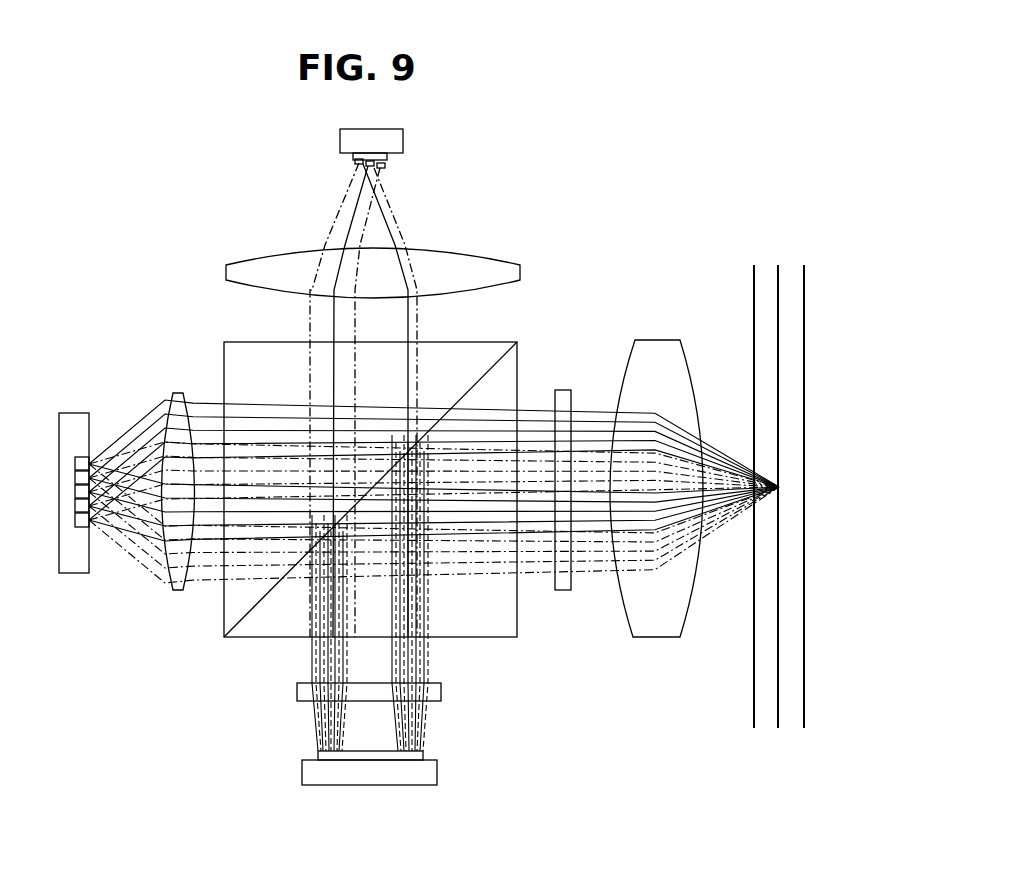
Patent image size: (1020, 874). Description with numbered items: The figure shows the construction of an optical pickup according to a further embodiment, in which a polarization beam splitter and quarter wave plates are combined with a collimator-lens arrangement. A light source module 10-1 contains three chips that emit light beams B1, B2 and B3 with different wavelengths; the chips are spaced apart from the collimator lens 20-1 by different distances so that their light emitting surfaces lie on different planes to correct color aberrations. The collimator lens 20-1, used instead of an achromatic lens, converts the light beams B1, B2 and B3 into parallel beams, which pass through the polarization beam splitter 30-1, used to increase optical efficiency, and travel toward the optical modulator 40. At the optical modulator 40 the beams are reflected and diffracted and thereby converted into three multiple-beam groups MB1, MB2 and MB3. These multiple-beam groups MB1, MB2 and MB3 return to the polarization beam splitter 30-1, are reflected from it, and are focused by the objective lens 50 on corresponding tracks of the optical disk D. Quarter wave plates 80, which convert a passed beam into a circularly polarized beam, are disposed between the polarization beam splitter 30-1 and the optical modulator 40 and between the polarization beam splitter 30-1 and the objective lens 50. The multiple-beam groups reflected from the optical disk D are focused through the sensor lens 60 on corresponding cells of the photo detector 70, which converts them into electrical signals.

The light source module 10-1 is at (395, 142).
The collimator lens 20-1 is at (472, 270).
The polarization beam splitter 30-1 is at (505, 390).
The optical modulator 40 is at (317, 773).
The objective lens 50 is at (663, 348).
The sensor lens 60 is at (180, 393).
The photo detector 70 is at (73, 425).
The quarter wave plate 80 is at (562, 593).
The optical disk D is at (803, 308).
The light beam B1 is at (350, 228).
The light beam B2 is at (345, 197).
The light beam B3 is at (398, 222).
The multiple-beam group MB1 is at (415, 743).
The multiple-beam group MB2 is at (303, 719).
The multiple-beam group MB3 is at (423, 730).